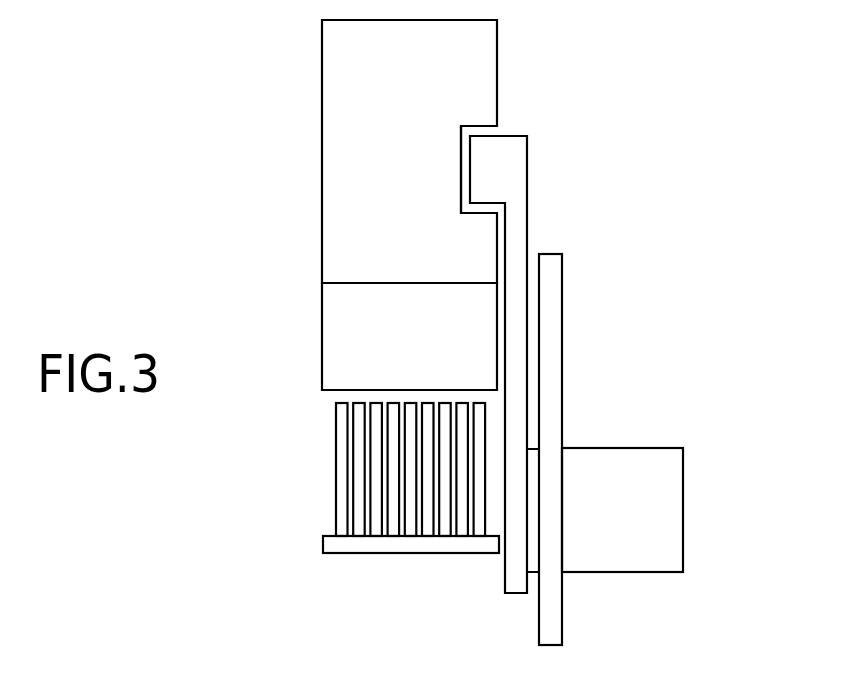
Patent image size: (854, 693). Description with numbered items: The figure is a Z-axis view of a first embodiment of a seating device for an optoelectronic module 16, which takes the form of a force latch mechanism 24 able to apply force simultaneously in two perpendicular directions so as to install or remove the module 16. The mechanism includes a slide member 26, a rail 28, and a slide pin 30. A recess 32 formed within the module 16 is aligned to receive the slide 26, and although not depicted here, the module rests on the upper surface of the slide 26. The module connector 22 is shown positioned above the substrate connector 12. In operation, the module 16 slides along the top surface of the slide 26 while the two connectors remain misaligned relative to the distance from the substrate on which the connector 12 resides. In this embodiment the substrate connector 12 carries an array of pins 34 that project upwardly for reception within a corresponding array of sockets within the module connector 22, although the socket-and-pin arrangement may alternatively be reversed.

The substrate connector 12 is at (420, 554).
The optoelectronic module 16 is at (335, 170).
The module connector 22 is at (335, 340).
The force latch mechanism 24 is at (552, 253).
The slide member 26 is at (527, 167).
The rail 28 is at (563, 372).
The slide pin 30 is at (673, 510).
The recess 32 is at (482, 131).
The array of pins 34 is at (335, 467).